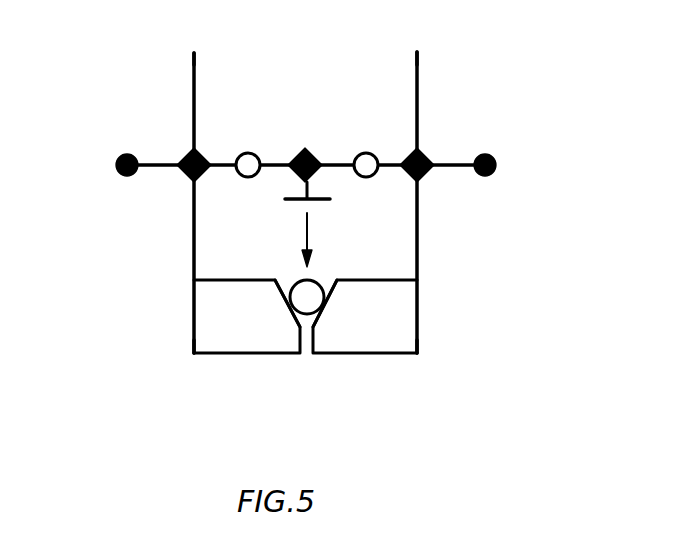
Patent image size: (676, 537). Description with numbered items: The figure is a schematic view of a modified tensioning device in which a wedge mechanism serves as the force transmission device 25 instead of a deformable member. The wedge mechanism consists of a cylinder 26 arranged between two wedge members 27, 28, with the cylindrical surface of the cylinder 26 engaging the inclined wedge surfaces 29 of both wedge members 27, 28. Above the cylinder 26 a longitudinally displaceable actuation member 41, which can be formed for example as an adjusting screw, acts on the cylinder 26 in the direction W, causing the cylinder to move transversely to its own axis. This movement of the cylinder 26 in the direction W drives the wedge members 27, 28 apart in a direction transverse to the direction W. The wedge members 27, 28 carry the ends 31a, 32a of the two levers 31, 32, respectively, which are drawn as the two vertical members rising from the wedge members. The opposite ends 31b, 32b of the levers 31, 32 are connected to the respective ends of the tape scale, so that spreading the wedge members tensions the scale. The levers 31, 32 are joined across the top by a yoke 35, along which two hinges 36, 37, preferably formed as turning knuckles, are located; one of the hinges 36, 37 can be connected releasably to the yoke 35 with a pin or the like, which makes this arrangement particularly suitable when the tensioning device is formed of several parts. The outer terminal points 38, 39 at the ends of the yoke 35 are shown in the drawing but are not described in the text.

The force transmission device 25 is at (299, 357).
The cylinder 26 is at (317, 281).
The wedge member 27 is at (210, 308).
The wedge member 28 is at (400, 330).
The wedge surfaces 29 is at (288, 287).
The lever 31 is at (194, 232).
The end of lever 31a is at (194, 355).
The opposite end of lever 31b is at (194, 53).
The lever 32 is at (417, 248).
The end of lever 32a is at (417, 355).
The opposite end of lever 32b is at (417, 52).
The yoke 35 is at (340, 163).
The hinge 36 is at (247, 153).
The hinge 37 is at (370, 152).
The terminal 38 is at (122, 176).
The terminal 39 is at (495, 151).
The actuation member 41 is at (307, 228).